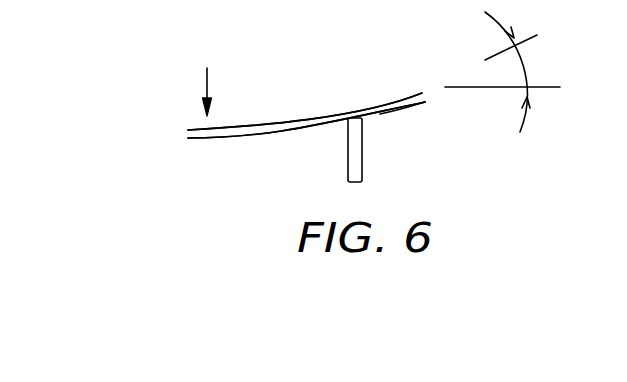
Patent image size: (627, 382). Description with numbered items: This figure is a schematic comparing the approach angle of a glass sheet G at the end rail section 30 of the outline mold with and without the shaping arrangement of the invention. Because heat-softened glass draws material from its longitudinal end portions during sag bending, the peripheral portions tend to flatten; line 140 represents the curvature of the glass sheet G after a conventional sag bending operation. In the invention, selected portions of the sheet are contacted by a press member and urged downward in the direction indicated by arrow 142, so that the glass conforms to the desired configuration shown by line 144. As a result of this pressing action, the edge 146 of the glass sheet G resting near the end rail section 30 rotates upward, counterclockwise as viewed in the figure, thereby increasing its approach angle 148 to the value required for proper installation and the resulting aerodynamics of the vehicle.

The glass sheet G is at (278, 128).
The end rail section 30 is at (362, 173).
The line representing curvature after conventional sag bending 140 is at (240, 130).
The arrow indicating downward urging 142 is at (206, 82).
The line representing desired configuration 144 is at (210, 141).
The edge of the glass sheet 146 is at (425, 103).
The approach angle 148 is at (523, 60).